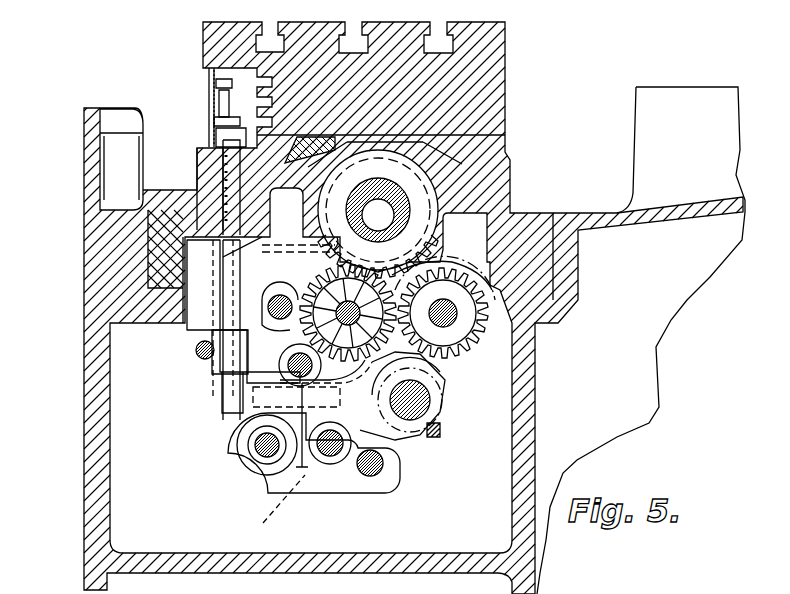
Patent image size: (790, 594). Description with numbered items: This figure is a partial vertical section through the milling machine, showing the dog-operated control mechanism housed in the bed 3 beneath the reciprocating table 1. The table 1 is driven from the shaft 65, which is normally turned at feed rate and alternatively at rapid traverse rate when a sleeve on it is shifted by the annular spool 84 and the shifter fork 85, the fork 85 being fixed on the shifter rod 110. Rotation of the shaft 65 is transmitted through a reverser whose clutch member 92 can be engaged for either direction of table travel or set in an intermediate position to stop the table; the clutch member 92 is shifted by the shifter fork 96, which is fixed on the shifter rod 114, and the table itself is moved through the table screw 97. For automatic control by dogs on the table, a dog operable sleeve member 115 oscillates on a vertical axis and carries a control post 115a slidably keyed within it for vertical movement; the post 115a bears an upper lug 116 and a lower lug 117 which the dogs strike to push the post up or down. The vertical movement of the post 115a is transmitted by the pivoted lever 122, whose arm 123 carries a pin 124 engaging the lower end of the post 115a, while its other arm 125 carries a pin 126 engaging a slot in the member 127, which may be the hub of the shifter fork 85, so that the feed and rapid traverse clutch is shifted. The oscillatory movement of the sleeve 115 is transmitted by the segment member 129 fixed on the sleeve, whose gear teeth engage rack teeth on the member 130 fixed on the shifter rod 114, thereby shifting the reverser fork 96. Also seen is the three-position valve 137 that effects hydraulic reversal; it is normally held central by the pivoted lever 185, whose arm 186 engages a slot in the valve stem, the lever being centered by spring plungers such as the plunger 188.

The table 1 is at (503, 97).
The bed 3 is at (87, 292).
The lug 116 is at (228, 82).
The control post 115a is at (178, 403).
The lug 117 is at (228, 131).
The spring plunger 188 is at (220, 182).
The pivoted lever 185 is at (280, 234).
The table screw 97 is at (393, 217).
The arm 186 is at (330, 272).
The member 130 is at (280, 316).
The shifter rod 114 is at (312, 368).
The clutch member 92 is at (453, 338).
The dog operable sleeve member 115 is at (200, 320).
The valve 137 is at (198, 349).
The segment member 129 is at (215, 372).
The pin 124 is at (243, 426).
The arm 123 is at (250, 437).
The pivoted lever 122 is at (256, 444).
The shifter fork 96 is at (362, 356).
The shaft 65 is at (433, 397).
The annular spool 84 is at (436, 428).
The shifter fork 85 is at (420, 440).
The arm 125 is at (300, 462).
The pin 126 is at (266, 507).
The member 127 is at (328, 462).
The shifter rod 110 is at (350, 452).